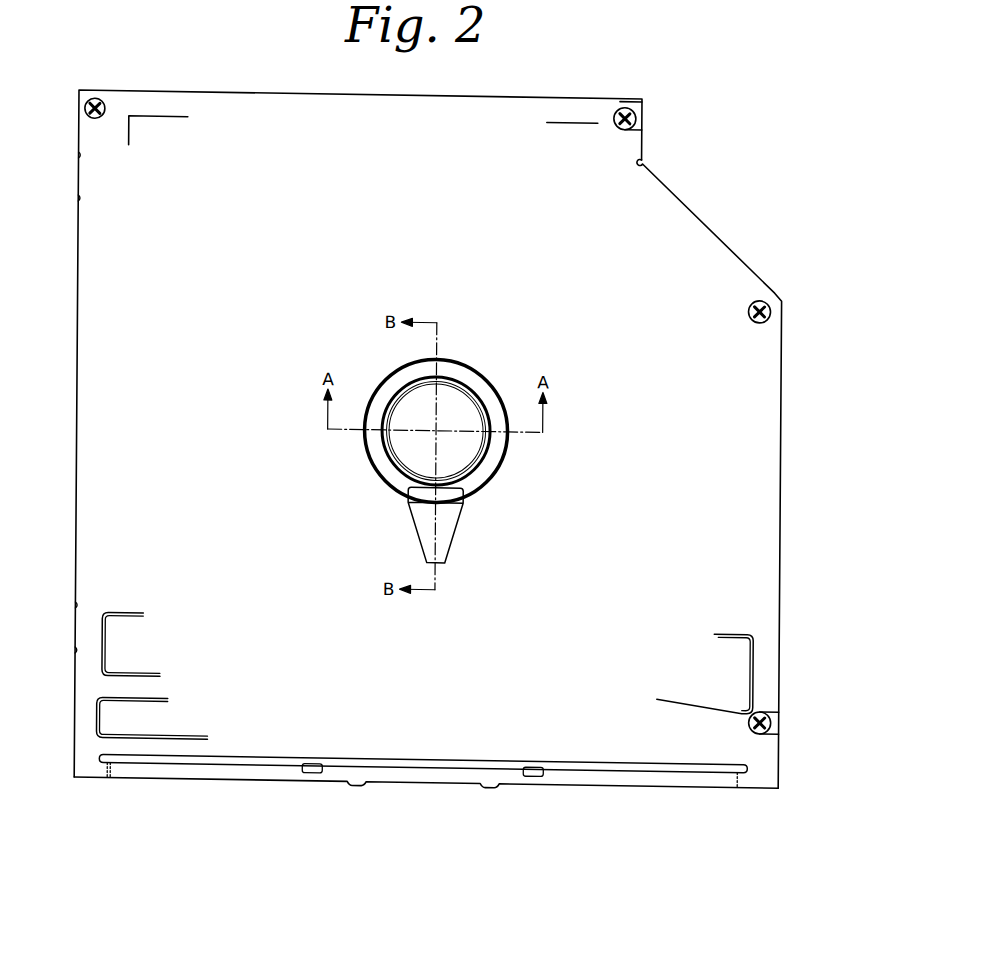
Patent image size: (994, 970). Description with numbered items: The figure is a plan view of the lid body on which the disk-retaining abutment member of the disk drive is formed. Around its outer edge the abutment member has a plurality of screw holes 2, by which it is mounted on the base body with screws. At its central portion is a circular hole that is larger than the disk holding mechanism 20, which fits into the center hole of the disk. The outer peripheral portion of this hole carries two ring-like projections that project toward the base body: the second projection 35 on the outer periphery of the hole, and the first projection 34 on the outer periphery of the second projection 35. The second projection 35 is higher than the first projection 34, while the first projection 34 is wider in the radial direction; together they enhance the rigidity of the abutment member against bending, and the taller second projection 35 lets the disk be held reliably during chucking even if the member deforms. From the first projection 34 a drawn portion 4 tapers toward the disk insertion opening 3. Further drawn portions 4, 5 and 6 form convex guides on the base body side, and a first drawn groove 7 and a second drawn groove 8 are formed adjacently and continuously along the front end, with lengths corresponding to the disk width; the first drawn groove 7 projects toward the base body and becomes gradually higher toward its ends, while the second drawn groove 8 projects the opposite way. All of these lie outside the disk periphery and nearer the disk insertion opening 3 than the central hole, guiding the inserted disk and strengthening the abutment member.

The screw holes 2 is at (95, 98).
The disk insertion opening 3 is at (595, 782).
The drawn portion 4 is at (120, 644).
The drawn portion 5 is at (740, 630).
The drawn portion 6 is at (124, 714).
The first drawn groove 7 is at (290, 752).
The second drawn groove 8 is at (249, 772).
The disk holding mechanism 20 is at (413, 452).
The first projection 34 is at (464, 369).
The second projection 35 is at (483, 459).